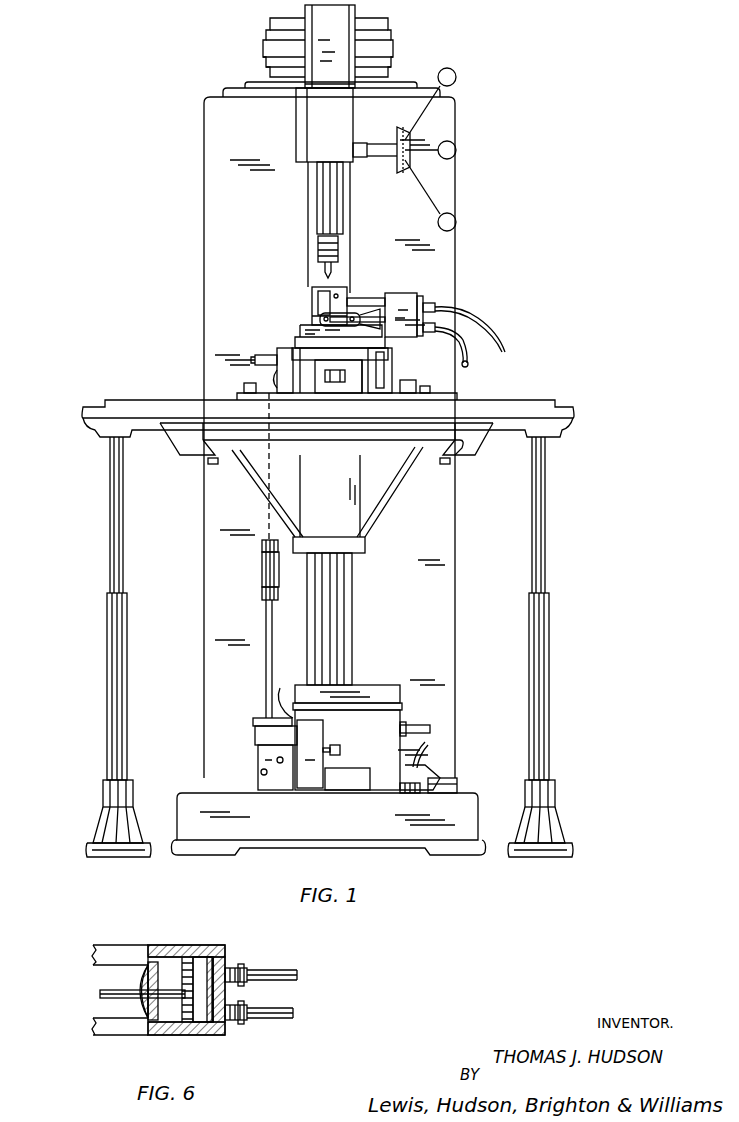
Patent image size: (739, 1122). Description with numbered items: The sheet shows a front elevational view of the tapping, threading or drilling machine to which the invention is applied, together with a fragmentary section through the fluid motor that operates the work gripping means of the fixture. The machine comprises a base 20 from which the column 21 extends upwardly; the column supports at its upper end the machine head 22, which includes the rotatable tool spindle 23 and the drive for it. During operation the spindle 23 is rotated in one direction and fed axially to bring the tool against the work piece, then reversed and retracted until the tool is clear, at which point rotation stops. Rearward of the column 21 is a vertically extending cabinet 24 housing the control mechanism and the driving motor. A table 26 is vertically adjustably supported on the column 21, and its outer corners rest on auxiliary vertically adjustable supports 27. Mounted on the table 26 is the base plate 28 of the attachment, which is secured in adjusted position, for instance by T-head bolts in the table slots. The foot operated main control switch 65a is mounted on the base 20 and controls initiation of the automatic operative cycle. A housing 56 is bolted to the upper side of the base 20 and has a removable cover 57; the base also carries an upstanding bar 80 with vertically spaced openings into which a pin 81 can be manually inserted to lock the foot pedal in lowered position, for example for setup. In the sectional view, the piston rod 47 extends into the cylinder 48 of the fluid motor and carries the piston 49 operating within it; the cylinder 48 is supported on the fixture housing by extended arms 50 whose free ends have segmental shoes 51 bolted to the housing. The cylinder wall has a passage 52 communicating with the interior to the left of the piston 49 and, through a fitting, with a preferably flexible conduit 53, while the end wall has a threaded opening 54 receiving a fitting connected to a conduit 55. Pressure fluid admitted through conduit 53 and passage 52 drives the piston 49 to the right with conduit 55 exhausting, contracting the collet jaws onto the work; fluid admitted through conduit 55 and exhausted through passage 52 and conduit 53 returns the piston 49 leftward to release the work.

In FIG. 1, the base 20 is at (342, 806).
In FIG. 1, the column 21 is at (348, 260).
In FIG. 1, the machine head 22 is at (330, 72).
In FIG. 1, the tool spindle 23 is at (338, 240).
In FIG. 1, the cabinet 24 is at (455, 530).
In FIG. 1, the table 26 is at (518, 400).
In FIG. 1, the auxiliary vertically adjustable supports 27 is at (110, 680).
In FIG. 1, the base plate 28 is at (415, 392).
In FIG. 1, the piston rod 47 is at (370, 312).
In FIG. 6, the piston rod 47 is at (110, 990).
In FIG. 1, the cylinder 48 is at (412, 296).
In FIG. 6, the cylinder 48 is at (200, 1040).
In FIG. 6, the piston 49 is at (162, 1040).
In FIG. 1, the extended arms 50 is at (370, 298).
In FIG. 1, the segmental shoes 51 is at (345, 298).
In FIG. 6, the passage 52 is at (222, 947).
In FIG. 1, the conduit 53 is at (500, 342).
In FIG. 6, the conduit 53 is at (297, 984).
In FIG. 6, the threaded opening 54 is at (218, 1006).
In FIG. 1, the conduit 55 is at (468, 364).
In FIG. 6, the conduit 55 is at (293, 1010).
In FIG. 1, the housing 56 is at (403, 718).
In FIG. 1, the removable cover 57 is at (388, 690).
In FIG. 1, the foot operated main control switch 65a is at (455, 780).
In FIG. 1, the upstanding bar 80 is at (323, 731).
In FIG. 1, the pin 81 is at (338, 748).